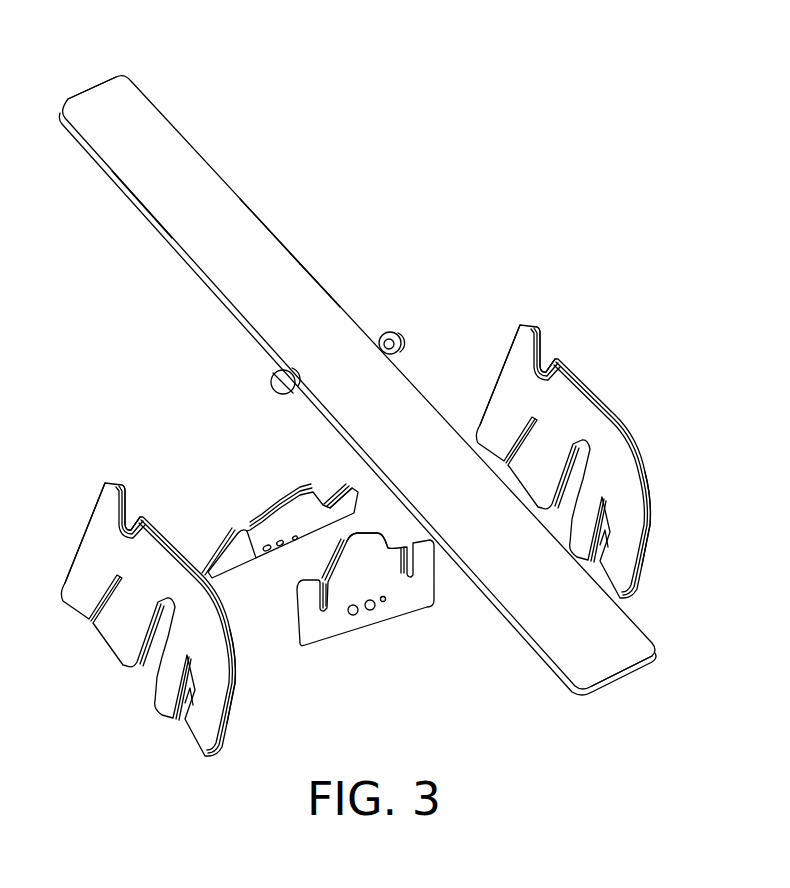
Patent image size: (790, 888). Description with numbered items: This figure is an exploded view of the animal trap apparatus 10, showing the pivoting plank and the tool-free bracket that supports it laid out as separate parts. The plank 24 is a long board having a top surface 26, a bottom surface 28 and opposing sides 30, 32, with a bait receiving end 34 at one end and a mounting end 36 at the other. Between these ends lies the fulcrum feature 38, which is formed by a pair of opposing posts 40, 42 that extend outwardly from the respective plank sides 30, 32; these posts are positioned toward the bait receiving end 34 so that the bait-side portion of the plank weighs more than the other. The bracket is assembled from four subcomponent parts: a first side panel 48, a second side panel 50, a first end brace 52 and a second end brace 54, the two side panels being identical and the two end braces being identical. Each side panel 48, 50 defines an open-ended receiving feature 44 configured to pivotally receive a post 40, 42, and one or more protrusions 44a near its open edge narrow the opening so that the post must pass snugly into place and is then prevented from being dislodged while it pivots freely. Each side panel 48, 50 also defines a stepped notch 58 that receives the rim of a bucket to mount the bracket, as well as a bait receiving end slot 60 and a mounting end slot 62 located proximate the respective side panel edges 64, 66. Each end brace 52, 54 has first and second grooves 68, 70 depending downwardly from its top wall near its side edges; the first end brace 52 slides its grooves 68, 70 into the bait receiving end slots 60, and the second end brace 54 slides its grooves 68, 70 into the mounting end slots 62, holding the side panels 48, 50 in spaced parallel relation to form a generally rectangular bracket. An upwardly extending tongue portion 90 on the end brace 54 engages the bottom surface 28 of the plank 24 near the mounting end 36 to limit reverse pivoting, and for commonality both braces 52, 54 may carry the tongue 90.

The animal trap apparatus 10 is at (531, 170).
The plank 24 is at (358, 381).
The top surface 26 is at (240, 200).
The bottom surface 28 is at (137, 200).
The side 30 is at (183, 252).
The side 32 is at (300, 264).
The bait receiving end 34 is at (92, 88).
The mounting end 36 is at (622, 685).
The fulcrum feature 38 is at (268, 393).
The post 40 is at (253, 390).
The post 42 is at (378, 333).
The receiving feature 44 is at (130, 503).
The protrusion 44a is at (130, 514).
The first side panel 48 is at (68, 555).
The second side panel 50 is at (638, 426).
The first end brace 52 is at (256, 514).
The second end brace 54 is at (365, 574).
The notch 58 is at (140, 665).
The bait receiving end slot 60 is at (93, 622).
The mounting end slot 62 is at (177, 723).
The side panel edge 64 is at (92, 500).
The side panel edge 66 is at (233, 697).
The first groove 68 is at (256, 532).
The second groove 70 is at (331, 507).
The tongue portion 90 is at (359, 531).